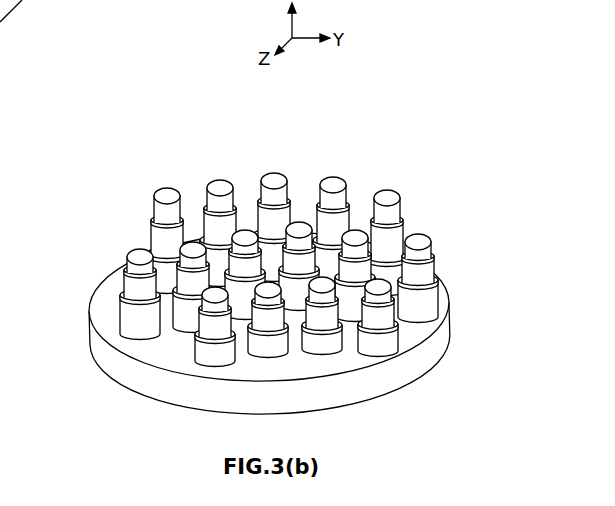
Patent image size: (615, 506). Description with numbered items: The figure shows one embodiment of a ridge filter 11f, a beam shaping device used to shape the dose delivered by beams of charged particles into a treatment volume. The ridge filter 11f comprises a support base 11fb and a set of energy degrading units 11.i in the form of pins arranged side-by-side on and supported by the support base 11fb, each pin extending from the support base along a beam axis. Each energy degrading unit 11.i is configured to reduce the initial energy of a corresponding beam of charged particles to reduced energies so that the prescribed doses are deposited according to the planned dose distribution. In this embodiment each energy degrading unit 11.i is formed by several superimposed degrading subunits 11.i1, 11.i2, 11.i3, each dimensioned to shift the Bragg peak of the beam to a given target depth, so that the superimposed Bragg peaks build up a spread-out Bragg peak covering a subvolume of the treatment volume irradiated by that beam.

The ridge filter 11f is at (431, 206).
The support base 11fb is at (90, 323).
The energy degrading unit 11.i is at (108, 205).
The degrading subunit 11.i1 is at (164, 190).
The degrading subunit 11.i2 is at (157, 236).
The degrading subunit 11.i3 is at (162, 272).